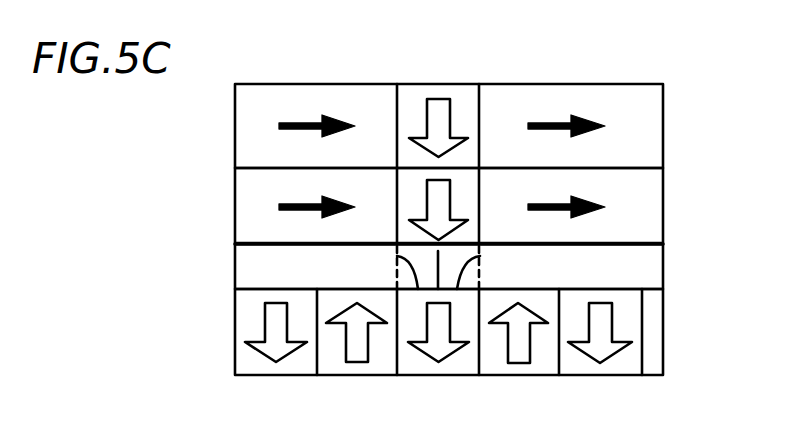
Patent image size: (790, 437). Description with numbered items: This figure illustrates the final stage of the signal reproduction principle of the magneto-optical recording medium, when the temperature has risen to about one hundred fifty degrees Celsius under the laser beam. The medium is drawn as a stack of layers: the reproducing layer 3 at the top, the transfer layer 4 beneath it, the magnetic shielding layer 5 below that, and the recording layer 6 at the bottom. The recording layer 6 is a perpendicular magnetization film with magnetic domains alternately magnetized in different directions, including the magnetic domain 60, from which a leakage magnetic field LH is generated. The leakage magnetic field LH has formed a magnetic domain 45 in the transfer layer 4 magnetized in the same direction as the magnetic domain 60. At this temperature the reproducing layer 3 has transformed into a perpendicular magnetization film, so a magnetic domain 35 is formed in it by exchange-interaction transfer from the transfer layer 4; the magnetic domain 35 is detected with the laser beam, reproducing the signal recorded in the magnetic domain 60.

The reproducing layer 3 is at (657, 125).
The transfer layer 4 is at (657, 205).
The magnetic shielding layer 5 is at (657, 268).
The recording layer 6 is at (657, 330).
The magnetic domain 35 is at (462, 95).
The magnetic domain 45 is at (398, 236).
The magnetic domain 60 is at (455, 365).
The leakage magnetic field LH is at (417, 275).